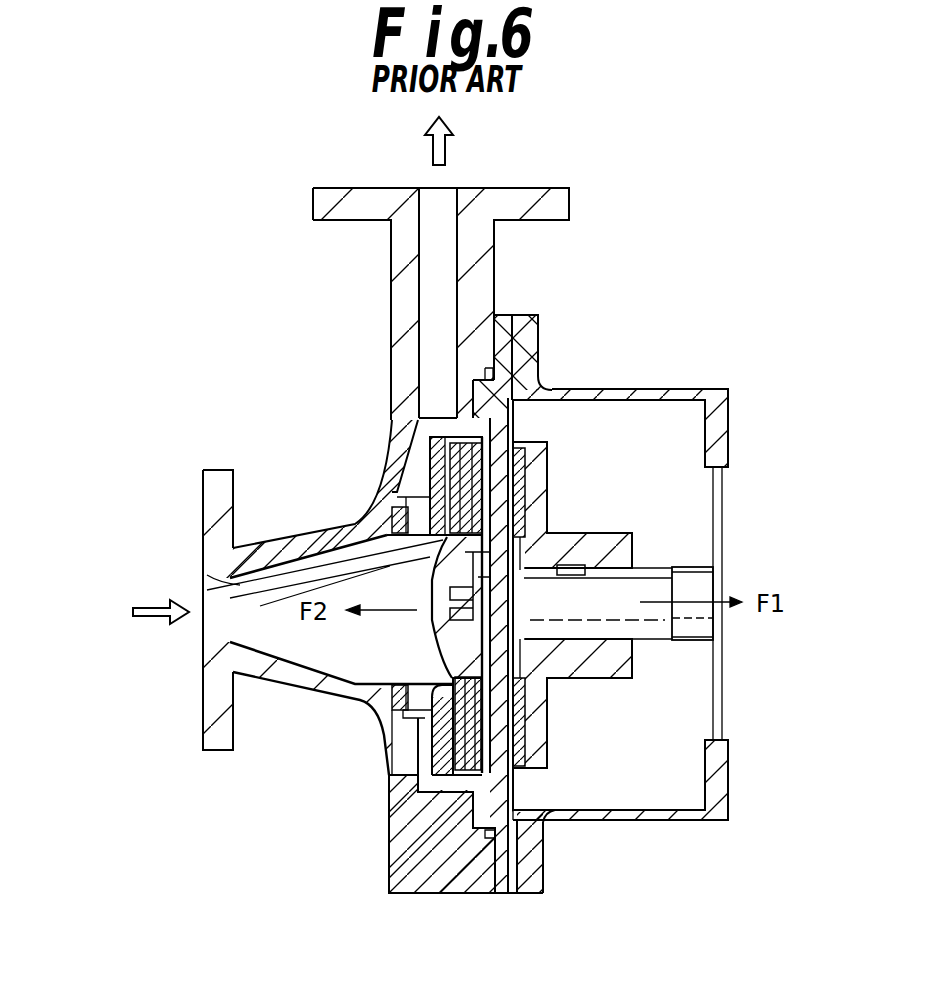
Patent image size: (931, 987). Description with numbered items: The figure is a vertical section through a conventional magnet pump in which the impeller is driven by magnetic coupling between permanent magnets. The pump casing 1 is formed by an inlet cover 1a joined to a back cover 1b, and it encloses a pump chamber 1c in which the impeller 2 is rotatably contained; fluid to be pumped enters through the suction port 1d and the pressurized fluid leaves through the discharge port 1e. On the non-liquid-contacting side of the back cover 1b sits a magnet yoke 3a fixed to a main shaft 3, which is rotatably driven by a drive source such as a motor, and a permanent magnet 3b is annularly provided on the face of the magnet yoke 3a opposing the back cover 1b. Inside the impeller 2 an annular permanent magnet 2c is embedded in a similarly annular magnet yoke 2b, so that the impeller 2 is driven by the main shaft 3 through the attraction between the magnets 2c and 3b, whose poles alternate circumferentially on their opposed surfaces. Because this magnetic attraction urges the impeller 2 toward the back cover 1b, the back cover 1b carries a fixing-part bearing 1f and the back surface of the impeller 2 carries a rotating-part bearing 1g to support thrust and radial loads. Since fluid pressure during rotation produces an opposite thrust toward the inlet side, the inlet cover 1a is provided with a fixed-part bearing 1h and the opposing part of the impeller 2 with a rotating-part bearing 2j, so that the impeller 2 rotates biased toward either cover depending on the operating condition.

The pump casing 1 is at (468, 895).
The inlet cover 1a is at (288, 686).
The back cover 1b is at (510, 895).
The pump chamber 1c is at (385, 745).
The suction port 1d is at (200, 640).
The discharge port 1e is at (445, 187).
The fixing-part bearing 1f is at (387, 547).
The rotating-part bearing 1g is at (400, 548).
The fixed-part bearing 1h is at (390, 703).
The impeller 2 is at (443, 790).
The magnet yoke 2b is at (468, 435).
The annular permanent magnet 2c is at (467, 773).
The rotating-part bearing 2j is at (385, 742).
The main shaft 3 is at (657, 565).
The magnet yoke 3a is at (607, 680).
The permanent magnet 3b is at (523, 765).